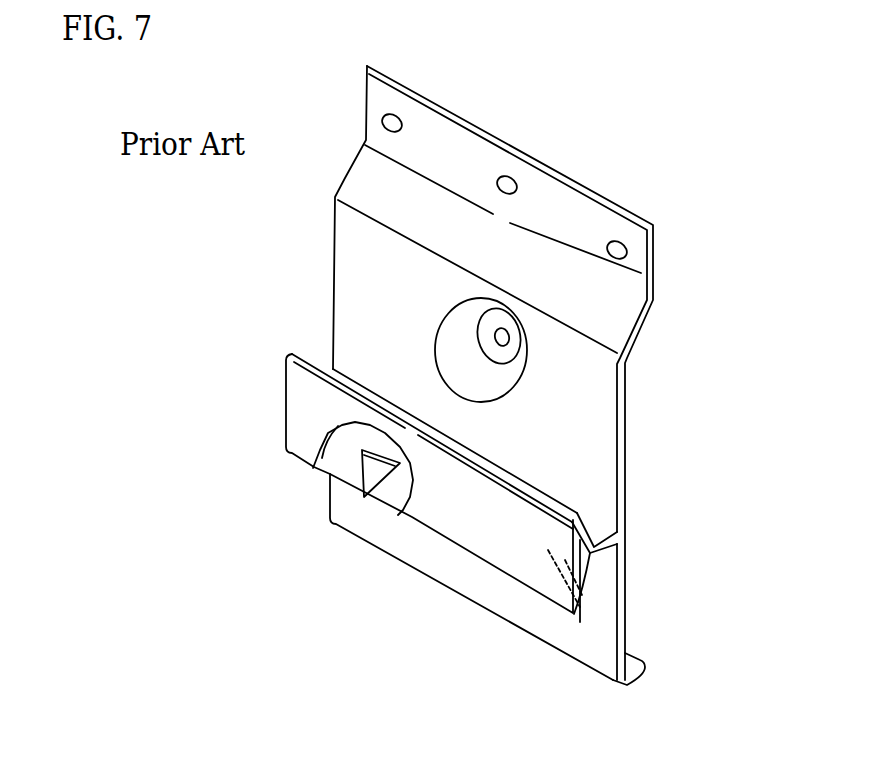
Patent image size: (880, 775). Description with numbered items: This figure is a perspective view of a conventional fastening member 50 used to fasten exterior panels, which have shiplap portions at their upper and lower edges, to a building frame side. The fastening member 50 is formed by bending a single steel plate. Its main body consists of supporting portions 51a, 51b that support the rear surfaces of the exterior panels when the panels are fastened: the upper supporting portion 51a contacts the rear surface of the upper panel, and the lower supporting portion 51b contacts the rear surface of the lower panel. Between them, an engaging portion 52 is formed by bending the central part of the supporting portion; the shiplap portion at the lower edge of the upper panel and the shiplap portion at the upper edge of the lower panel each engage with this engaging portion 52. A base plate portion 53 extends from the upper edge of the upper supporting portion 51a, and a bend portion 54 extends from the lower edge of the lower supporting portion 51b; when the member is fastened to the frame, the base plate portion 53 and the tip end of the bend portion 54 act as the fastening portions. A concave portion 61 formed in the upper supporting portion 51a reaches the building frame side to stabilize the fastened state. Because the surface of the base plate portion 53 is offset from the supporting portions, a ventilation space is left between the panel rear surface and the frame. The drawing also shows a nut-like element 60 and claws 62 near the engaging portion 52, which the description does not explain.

The fastening member 50 is at (447, 395).
The upper supporting portion 51a is at (597, 427).
The lower supporting portion 51b is at (492, 595).
The engaging portion 52 is at (268, 420).
The base plate portion 53 is at (636, 252).
The bend portion 54 is at (633, 670).
The nut 60 is at (463, 520).
The concave portion 61 is at (447, 342).
The claws 62 is at (372, 470).